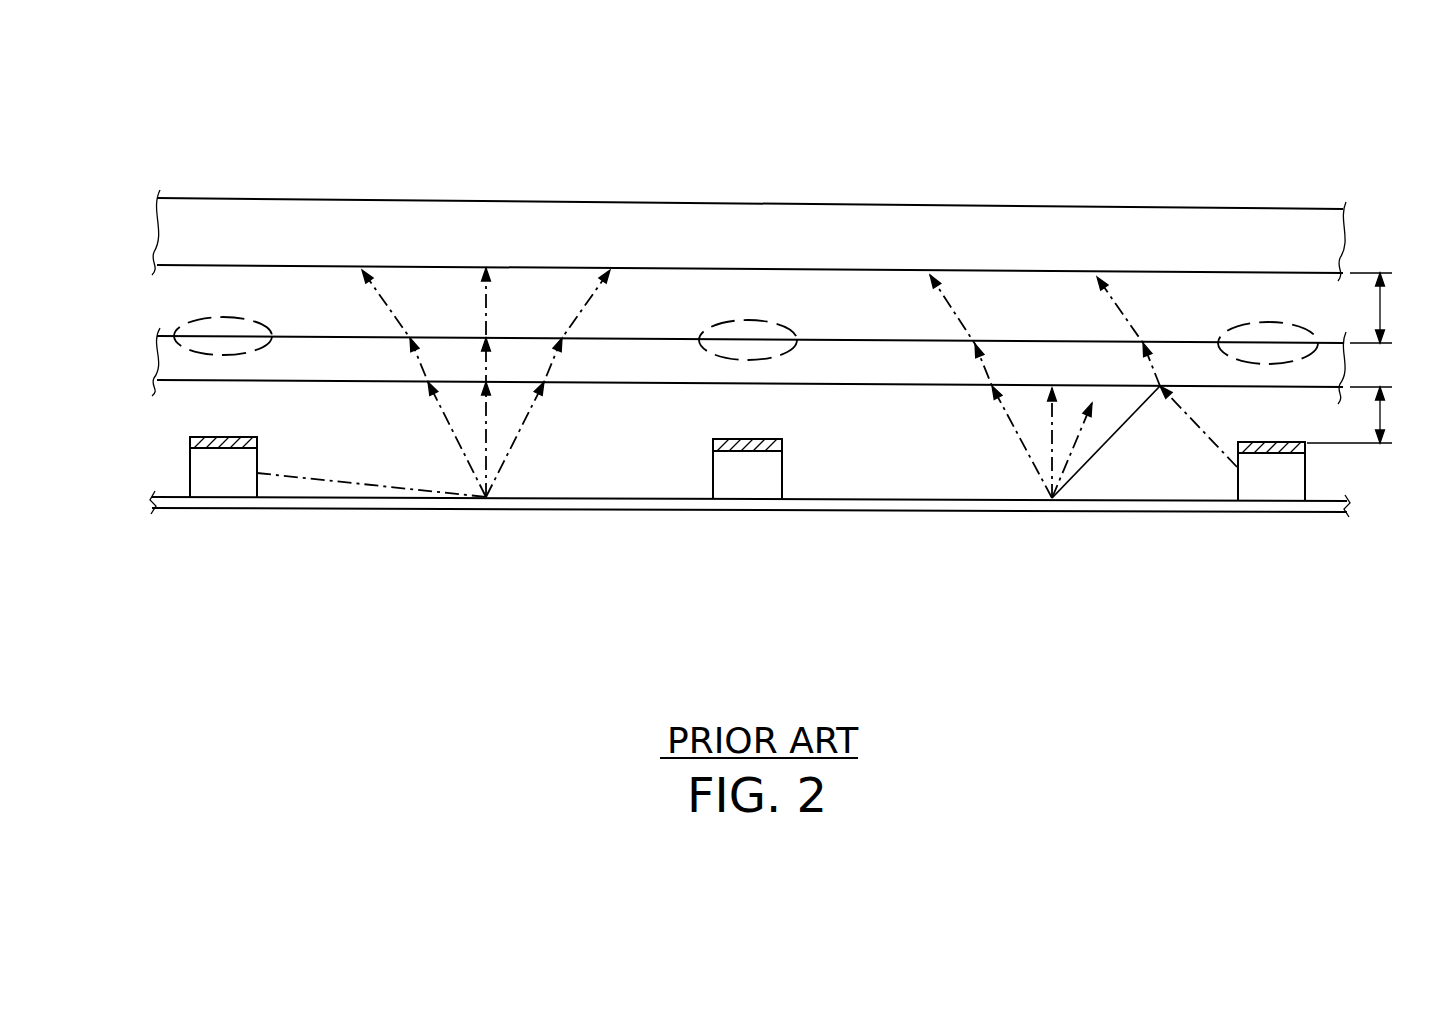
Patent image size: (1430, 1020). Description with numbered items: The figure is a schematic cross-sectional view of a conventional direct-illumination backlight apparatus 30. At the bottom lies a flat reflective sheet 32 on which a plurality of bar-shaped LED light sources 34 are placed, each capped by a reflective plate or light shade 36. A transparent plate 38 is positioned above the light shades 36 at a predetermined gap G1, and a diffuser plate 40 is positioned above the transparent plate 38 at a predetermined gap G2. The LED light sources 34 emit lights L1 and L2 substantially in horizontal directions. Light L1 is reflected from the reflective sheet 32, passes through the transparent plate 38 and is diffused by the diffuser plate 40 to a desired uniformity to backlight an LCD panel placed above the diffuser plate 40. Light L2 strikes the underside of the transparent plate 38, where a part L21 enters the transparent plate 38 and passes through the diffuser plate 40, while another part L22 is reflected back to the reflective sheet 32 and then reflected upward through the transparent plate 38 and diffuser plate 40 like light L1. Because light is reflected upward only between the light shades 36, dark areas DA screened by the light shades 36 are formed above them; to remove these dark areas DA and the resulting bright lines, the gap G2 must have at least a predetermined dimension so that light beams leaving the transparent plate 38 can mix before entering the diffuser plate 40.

The direct-illumination backlight apparatus 30 is at (697, 128).
The flat reflective sheet 32 is at (620, 505).
The bar-shaped LED light source 34 is at (222, 485).
The light shade 36 is at (190, 442).
The transparent plate 38 is at (175, 360).
The diffuser plate 40 is at (200, 220).
The light L1 is at (330, 485).
The light L2 is at (1210, 442).
The part of light L2 L21 is at (1125, 317).
The part of light L2 L22 is at (1015, 437).
The dark area DA is at (1283, 323).
The gap G1 is at (1362, 415).
The gap G2 is at (1383, 308).